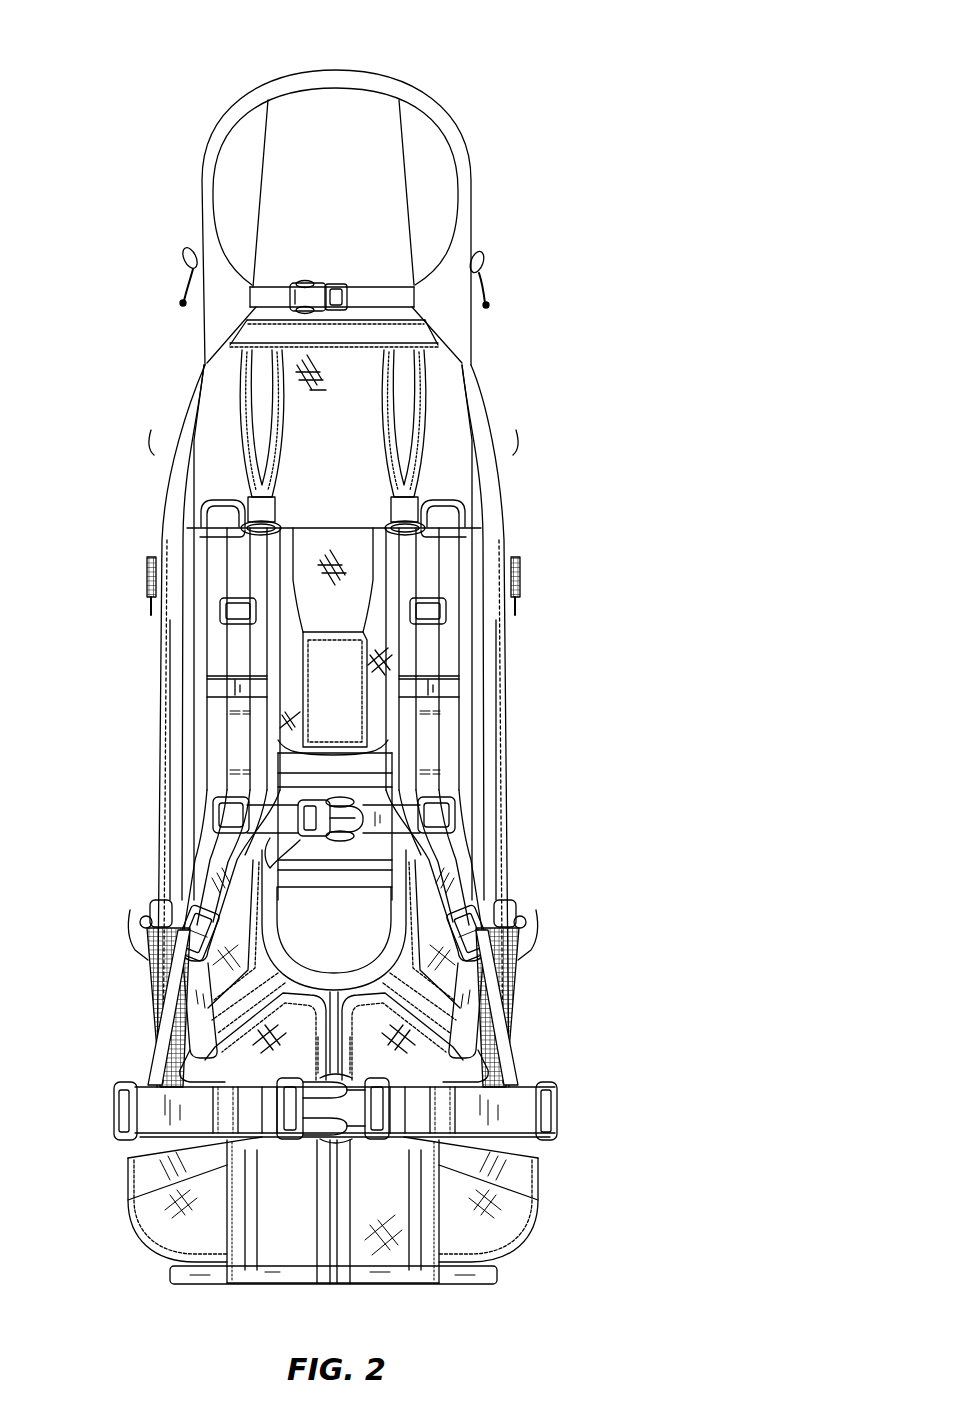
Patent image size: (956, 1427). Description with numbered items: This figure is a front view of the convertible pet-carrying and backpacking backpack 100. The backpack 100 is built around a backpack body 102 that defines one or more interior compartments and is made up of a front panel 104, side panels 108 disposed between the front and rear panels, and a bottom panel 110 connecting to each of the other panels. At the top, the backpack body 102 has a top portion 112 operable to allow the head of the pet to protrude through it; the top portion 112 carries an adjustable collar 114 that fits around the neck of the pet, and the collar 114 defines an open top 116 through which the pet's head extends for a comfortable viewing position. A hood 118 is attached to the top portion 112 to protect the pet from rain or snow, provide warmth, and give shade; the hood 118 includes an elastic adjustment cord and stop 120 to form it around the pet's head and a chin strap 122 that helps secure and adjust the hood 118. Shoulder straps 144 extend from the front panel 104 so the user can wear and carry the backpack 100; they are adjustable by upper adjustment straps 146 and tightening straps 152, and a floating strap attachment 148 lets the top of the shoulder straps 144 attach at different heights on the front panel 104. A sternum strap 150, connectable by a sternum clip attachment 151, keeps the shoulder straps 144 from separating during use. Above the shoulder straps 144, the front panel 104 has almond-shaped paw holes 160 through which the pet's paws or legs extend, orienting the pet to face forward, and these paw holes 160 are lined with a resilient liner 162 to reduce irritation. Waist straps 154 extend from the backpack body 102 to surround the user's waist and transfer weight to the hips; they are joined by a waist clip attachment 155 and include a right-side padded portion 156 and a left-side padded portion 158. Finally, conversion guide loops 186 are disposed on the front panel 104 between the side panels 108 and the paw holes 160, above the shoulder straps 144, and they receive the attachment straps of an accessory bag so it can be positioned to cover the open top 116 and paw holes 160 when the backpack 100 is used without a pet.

The backpack 100 is at (583, 157).
The backpack body 102 is at (513, 707).
The front panel 104 is at (330, 547).
The side panels 108 is at (177, 557).
The bottom panel 110 is at (458, 1287).
The top portion 112 is at (443, 397).
The collar 114 is at (385, 332).
The open top 116 is at (360, 320).
The hood 118 is at (340, 68).
The elastic adjustment cord and stop 120 is at (184, 262).
The chin strap 122 is at (278, 297).
The shoulder straps 144 is at (453, 748).
The upper adjustment straps 146 is at (428, 580).
The floating strap attachment 148 is at (340, 678).
The sternum strap 150 is at (377, 823).
The sternum clip attachment 151 is at (337, 833).
The tightening straps 152 is at (497, 1008).
The waist straps 154 is at (510, 1107).
The waist clip attachment 155 is at (317, 1137).
The right-side padded portion 156 is at (160, 1222).
The left-side padded portion 158 is at (528, 1237).
The paw holes 160 is at (407, 433).
The resilient liner 162 is at (422, 463).
The conversion guide loops 186 is at (207, 508).